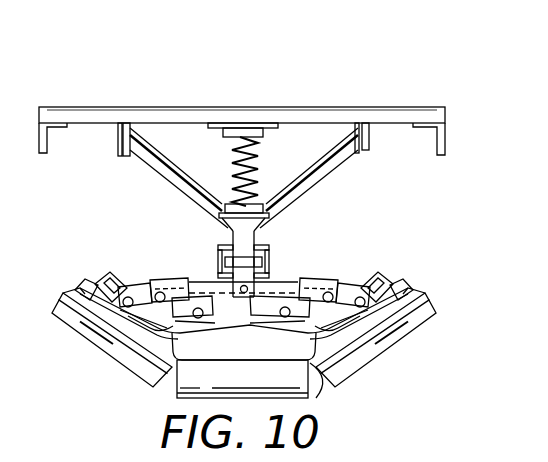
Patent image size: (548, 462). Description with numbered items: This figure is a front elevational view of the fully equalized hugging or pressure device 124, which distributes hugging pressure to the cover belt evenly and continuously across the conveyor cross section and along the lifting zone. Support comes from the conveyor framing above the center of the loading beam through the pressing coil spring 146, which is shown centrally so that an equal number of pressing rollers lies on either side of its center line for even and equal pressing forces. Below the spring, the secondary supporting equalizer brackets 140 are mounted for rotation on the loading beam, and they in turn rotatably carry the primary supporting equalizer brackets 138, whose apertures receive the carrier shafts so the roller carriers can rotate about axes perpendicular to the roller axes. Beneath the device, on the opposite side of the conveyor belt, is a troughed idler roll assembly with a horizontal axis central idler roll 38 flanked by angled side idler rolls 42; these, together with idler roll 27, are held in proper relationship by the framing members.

The fully equalized hugging or pressure device 124 is at (400, 203).
The pressing coil spring 146 is at (260, 170).
The secondary supporting equalizer bracket 140 is at (298, 280).
The primary supporting equalizer bracket 138 is at (136, 283).
The idler roll 27 is at (358, 366).
The side idler roll 42 is at (80, 340).
The central idler roll 38 is at (312, 394).